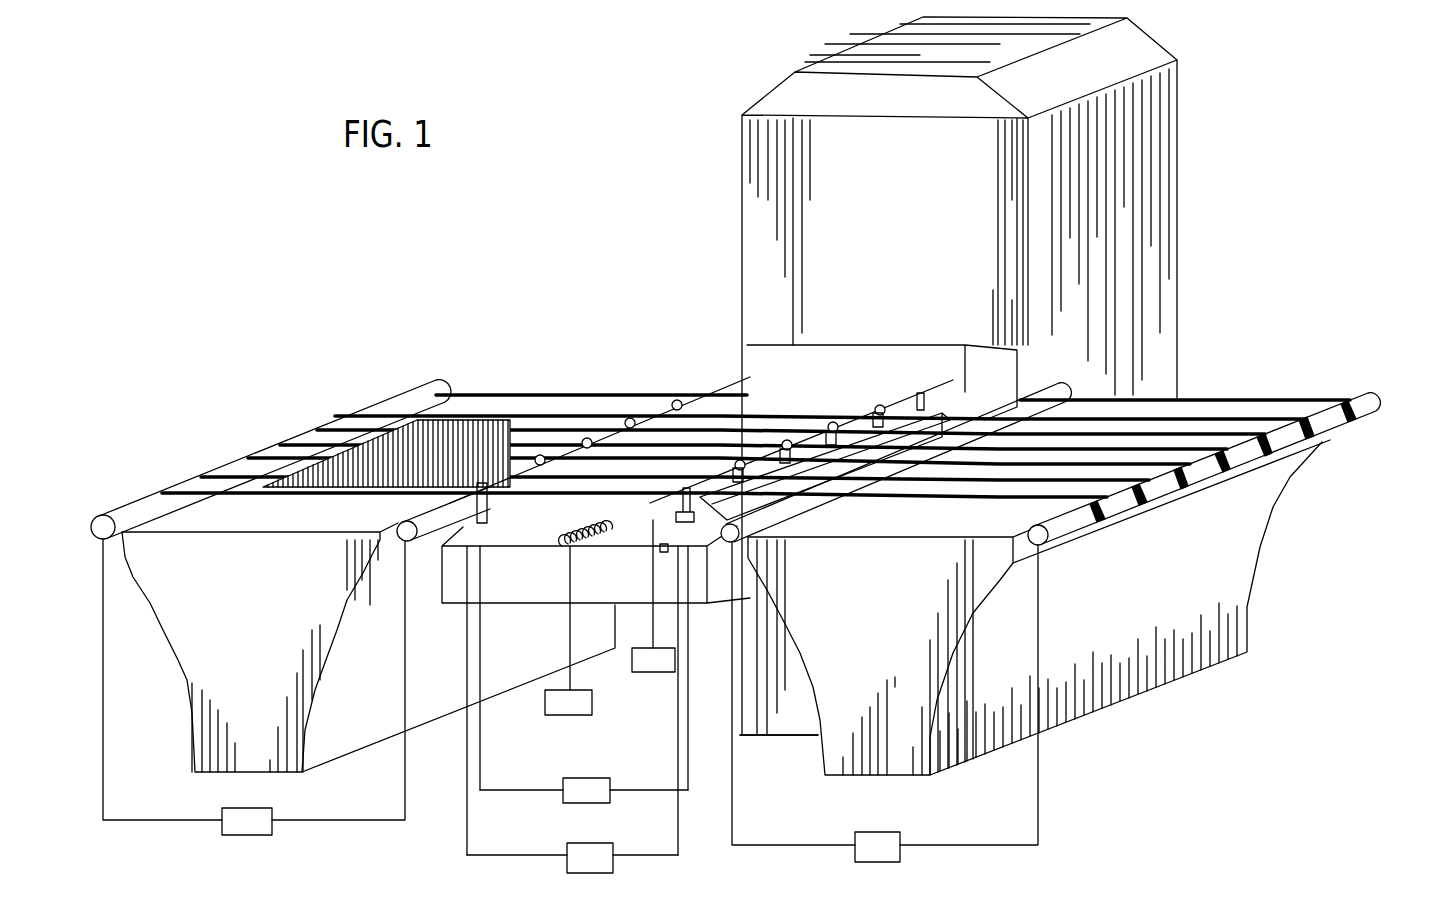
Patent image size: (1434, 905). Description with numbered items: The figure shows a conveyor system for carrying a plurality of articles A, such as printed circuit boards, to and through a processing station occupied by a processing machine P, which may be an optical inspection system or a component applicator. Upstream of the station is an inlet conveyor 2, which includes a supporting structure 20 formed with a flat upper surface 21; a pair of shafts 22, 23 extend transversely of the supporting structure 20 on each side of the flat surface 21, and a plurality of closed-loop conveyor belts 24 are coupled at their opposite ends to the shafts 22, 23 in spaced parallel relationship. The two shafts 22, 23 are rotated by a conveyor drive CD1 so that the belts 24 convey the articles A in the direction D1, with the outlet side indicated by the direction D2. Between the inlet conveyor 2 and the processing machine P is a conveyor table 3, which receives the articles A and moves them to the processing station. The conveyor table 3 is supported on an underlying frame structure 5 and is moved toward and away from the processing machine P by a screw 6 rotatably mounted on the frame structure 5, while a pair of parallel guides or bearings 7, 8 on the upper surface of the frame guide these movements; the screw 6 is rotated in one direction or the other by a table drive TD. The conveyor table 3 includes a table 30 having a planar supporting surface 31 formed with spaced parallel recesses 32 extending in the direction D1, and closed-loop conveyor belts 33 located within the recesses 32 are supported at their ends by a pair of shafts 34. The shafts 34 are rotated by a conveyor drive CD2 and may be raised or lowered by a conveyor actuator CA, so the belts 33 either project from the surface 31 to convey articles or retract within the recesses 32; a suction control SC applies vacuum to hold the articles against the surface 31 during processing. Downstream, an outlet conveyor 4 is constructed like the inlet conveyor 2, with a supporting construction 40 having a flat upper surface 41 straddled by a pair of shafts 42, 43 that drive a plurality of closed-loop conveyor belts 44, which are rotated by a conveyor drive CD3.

The processing machine P is at (878, 45).
The inlet conveyor 2 is at (322, 392).
The supporting structure 20 is at (248, 642).
The flat upper surface 21 is at (222, 506).
The shaft 22 is at (103, 516).
The shaft 23 is at (405, 543).
The closed-loop conveyor belts 24 is at (457, 418).
The articles A is at (335, 490).
The conveyor table 3 is at (697, 352).
The table 30 is at (555, 532).
The planar supporting surface 31 is at (550, 474).
The recesses 32 is at (880, 408).
The closed-loop conveyor belts 33 is at (778, 360).
The shafts 34 is at (740, 372).
The frame structure 5 is at (555, 592).
The screw 6 is at (590, 549).
The guide 7 is at (503, 546).
The guide 8 is at (663, 551).
The outlet conveyor 4 is at (1262, 332).
The supporting construction 40 is at (891, 642).
The flat upper surface 41 is at (960, 520).
The shaft 42 is at (762, 518).
The shaft 43 is at (1060, 532).
The closed-loop conveyor belts 44 is at (1355, 406).
The conveying direction D1 is at (615, 367).
The discharge direction D2 is at (1295, 378).
The table drive TD is at (568, 703).
The suction control SC is at (653, 660).
The conveyor actuator CA is at (584, 791).
The conveyor drive CD1 is at (247, 823).
The conveyor drive CD2 is at (572, 858).
The conveyor drive CD3 is at (878, 847).